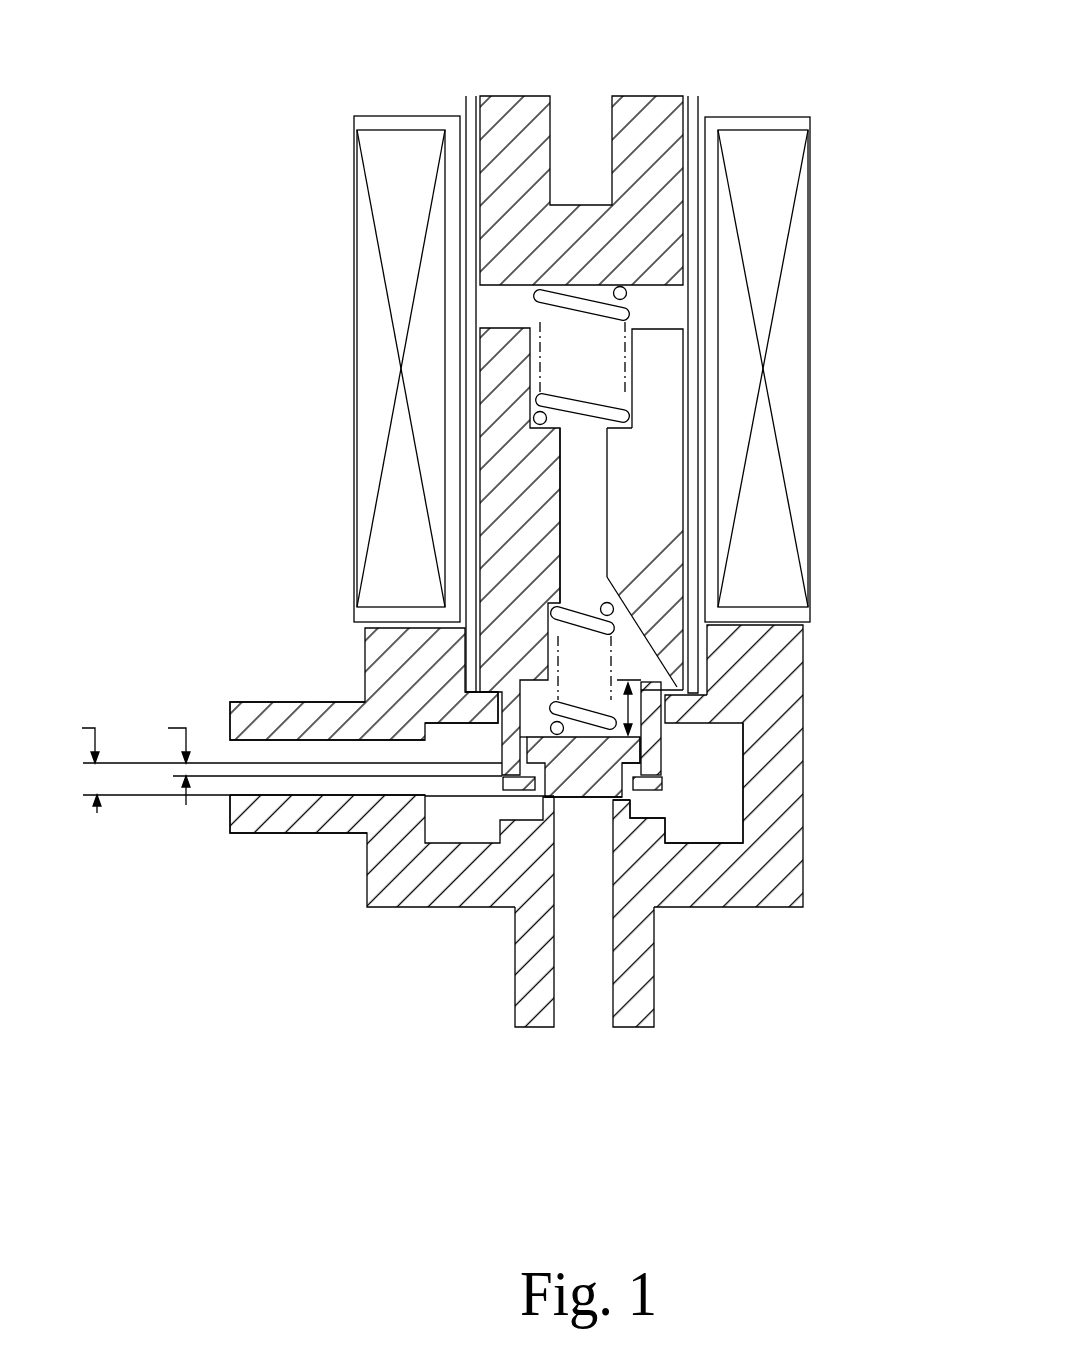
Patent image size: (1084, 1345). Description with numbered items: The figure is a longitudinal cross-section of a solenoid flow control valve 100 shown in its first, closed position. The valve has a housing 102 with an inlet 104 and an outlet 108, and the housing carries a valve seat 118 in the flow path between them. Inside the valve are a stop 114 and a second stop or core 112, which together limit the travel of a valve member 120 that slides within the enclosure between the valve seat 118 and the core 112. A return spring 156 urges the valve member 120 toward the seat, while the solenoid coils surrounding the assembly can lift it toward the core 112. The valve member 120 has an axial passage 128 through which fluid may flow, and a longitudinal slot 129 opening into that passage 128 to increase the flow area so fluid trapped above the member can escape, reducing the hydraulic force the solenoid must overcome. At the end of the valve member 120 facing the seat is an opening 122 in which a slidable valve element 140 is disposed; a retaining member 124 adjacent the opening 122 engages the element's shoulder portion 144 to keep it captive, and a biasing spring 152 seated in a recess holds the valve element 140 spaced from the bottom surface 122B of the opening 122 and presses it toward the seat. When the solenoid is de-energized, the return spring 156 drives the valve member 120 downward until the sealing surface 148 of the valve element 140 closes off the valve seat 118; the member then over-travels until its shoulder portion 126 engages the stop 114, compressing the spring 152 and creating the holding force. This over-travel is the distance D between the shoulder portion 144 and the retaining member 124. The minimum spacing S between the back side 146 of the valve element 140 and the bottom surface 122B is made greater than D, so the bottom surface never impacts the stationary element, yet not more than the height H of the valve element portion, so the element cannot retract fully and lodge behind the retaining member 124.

The flow control valve 100 is at (363, 1043).
The housing 102 is at (395, 862).
The inlet 104 is at (232, 748).
The outlet 108 is at (583, 1008).
The core 112 is at (527, 108).
The stop 114 is at (485, 690).
The valve seat 118 is at (662, 800).
The valve member 120 is at (487, 440).
The opening 122 is at (533, 680).
The bottom surface 122B is at (668, 672).
The retaining member 124 is at (660, 790).
The shoulder portion 126 is at (497, 697).
The passage 128 is at (570, 512).
The slot 129 is at (645, 493).
The valve element 140 is at (645, 760).
The shoulder portion 144 is at (660, 782).
The back side 146 is at (655, 750).
The sealing surface 148 is at (590, 800).
The spring 152 is at (620, 612).
The return spring 156 is at (635, 410).
The minimum spacing S is at (643, 683).
The height H is at (276, 763).
The over-travel distance D is at (322, 759).